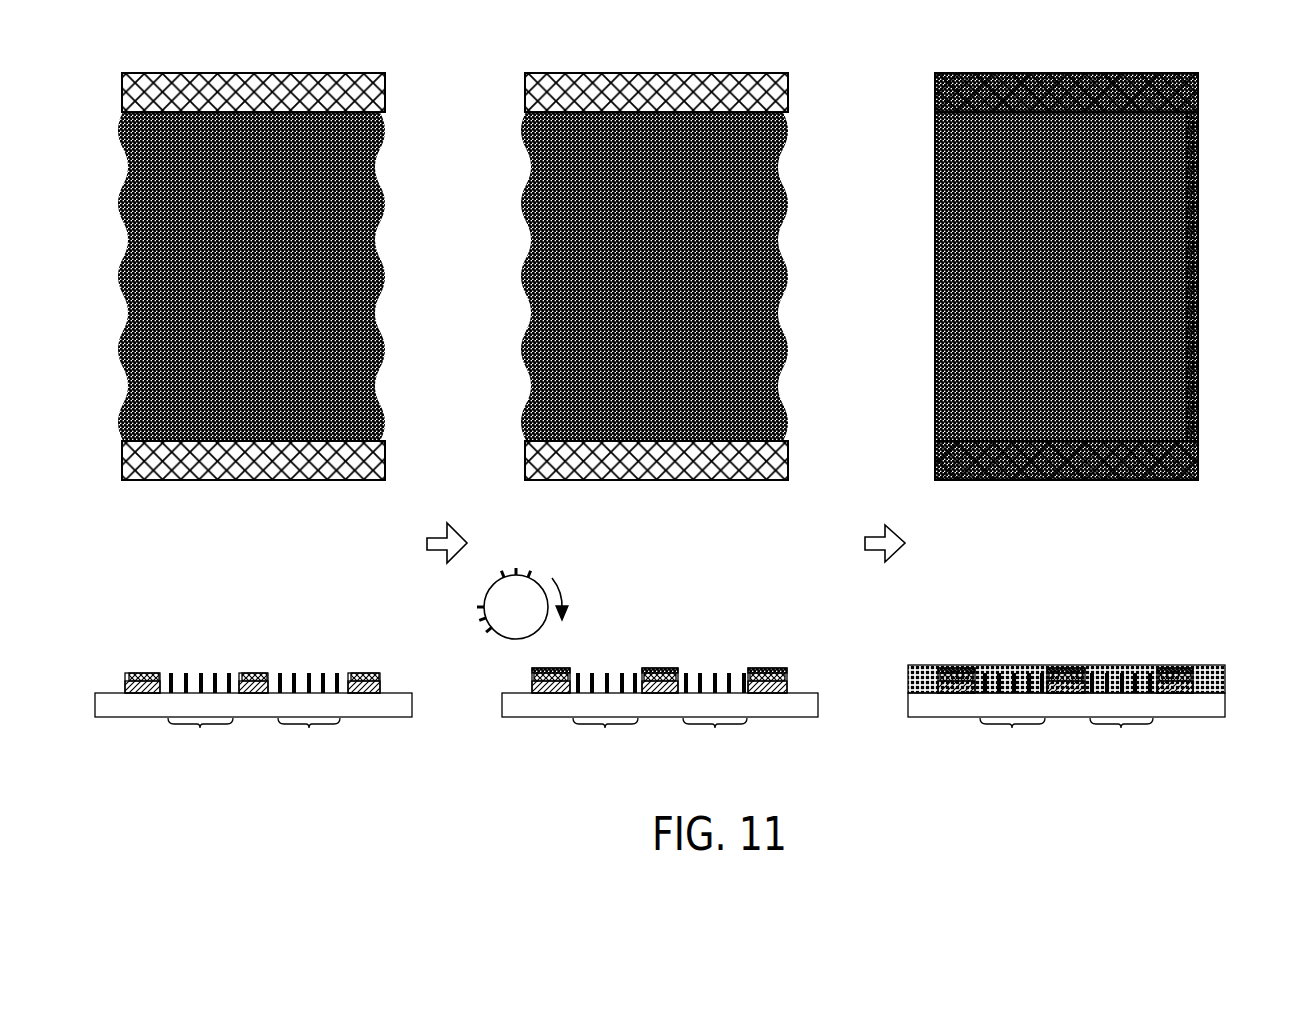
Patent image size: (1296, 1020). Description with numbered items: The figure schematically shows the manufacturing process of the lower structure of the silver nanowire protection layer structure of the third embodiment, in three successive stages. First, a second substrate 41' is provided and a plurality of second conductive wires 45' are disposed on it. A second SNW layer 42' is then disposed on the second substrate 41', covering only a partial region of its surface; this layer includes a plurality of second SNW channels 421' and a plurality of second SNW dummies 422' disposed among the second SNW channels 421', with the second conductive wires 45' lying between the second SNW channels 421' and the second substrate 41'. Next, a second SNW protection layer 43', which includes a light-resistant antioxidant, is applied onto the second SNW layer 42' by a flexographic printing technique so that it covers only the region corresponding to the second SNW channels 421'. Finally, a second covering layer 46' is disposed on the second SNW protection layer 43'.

The second substrate 41' is at (687, 720).
The second SNW layer 42' is at (701, 377).
The second SNW channels 421' is at (693, 402).
The second SNW dummies 422' is at (718, 550).
The second SNW protection layer 43' is at (906, 471).
The second conductive wires 45' is at (701, 623).
The second covering layer 46' is at (1094, 402).